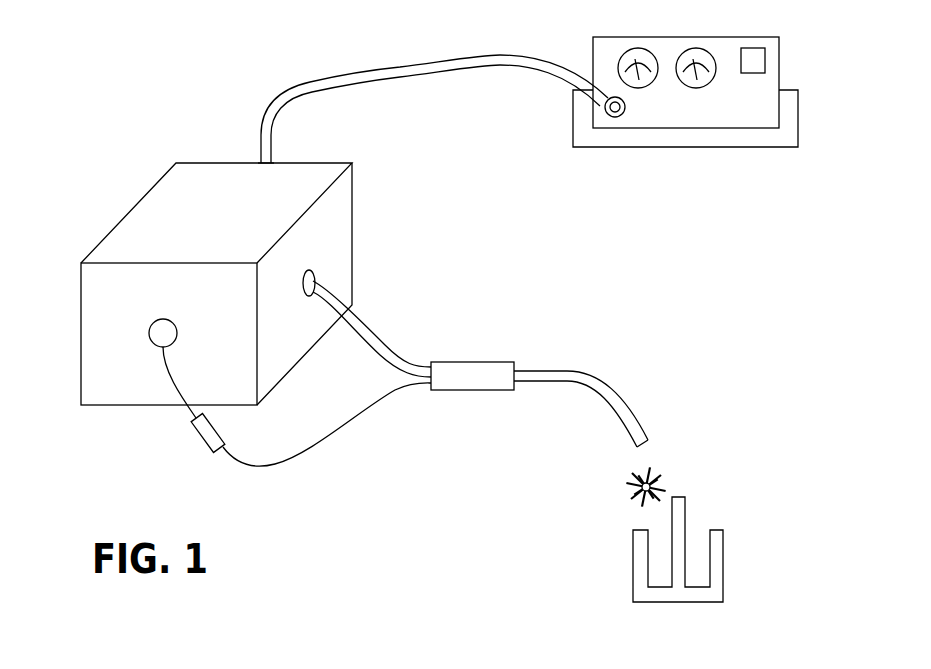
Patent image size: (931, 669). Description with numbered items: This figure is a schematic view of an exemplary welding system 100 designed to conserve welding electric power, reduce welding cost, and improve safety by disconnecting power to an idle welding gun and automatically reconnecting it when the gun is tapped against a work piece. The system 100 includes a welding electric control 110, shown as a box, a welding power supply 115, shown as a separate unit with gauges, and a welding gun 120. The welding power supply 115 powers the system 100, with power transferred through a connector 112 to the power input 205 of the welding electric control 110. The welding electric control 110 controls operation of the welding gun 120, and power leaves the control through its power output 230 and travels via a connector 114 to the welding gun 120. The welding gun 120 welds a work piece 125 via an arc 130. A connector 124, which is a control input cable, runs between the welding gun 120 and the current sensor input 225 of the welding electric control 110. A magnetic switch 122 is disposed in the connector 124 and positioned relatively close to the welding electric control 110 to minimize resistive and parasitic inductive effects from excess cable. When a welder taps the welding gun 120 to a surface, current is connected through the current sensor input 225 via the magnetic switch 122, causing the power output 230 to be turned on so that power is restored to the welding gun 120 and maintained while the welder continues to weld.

The system 100 is at (190, 135).
The welding electric control 110 is at (238, 228).
The connector 112 is at (318, 79).
The connector 114 is at (385, 344).
The welding power supply 115 is at (761, 120).
The welding gun 120 is at (520, 356).
The magnetic switch 122 is at (195, 445).
The connector 124 is at (298, 463).
The work piece 125 is at (633, 558).
The arc 130 is at (656, 463).
The power input 205 is at (280, 148).
The current sensor input 225 is at (153, 352).
The power output 230 is at (318, 275).